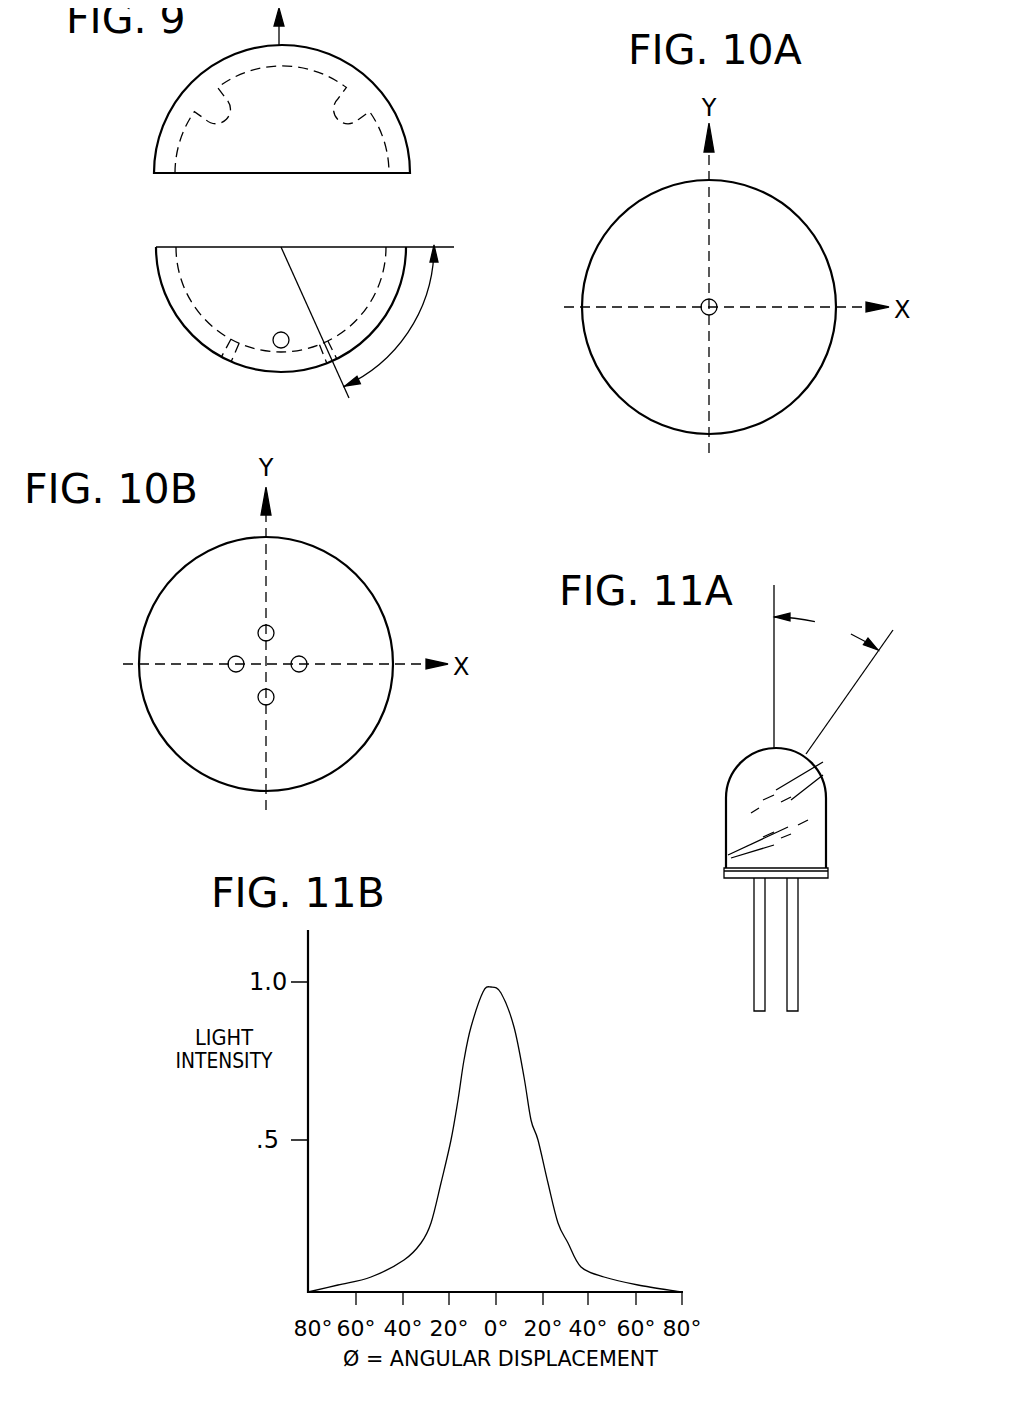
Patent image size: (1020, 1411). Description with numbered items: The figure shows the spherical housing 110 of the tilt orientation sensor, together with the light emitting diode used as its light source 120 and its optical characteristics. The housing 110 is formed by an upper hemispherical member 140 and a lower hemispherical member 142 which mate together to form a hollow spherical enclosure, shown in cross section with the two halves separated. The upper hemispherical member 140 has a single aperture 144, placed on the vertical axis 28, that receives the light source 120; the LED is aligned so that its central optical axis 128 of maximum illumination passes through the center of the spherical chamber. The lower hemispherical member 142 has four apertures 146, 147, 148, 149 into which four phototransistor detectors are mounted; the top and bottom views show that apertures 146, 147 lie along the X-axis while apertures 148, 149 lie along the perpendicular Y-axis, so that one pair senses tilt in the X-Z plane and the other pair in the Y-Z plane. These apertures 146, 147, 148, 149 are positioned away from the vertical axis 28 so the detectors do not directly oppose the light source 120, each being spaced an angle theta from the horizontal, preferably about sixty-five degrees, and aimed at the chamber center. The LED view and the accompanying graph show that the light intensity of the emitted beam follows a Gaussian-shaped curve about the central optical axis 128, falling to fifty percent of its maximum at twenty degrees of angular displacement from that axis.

In FIG. 9, the vertical axis 28 is at (279, 28).
In FIG. 9, the housing 110 is at (140, 212).
In FIG. 11A, the light source 120 is at (708, 723).
In FIG. 11A, the central optical axis 128 is at (824, 655).
In FIG. 11B, the central optical axis 128 is at (497, 987).
In FIG. 9, the upper hemispherical member 140 is at (406, 158).
In FIG. 10A, the upper hemispherical member 140 is at (607, 229).
In FIG. 9, the lower hemispherical member 142 is at (155, 276).
In FIG. 10B, the lower hemispherical member 142 is at (164, 590).
In FIG. 9, the aperture 144 is at (313, 70).
In FIG. 10A, the aperture 144 is at (714, 300).
In FIG. 9, the aperture 146 is at (225, 360).
In FIG. 10B, the aperture 146 is at (227, 658).
In FIG. 9, the aperture 147 is at (278, 332).
In FIG. 10B, the aperture 147 is at (305, 656).
In FIG. 10B, the aperture 148 is at (270, 625).
In FIG. 10B, the aperture 149 is at (272, 703).